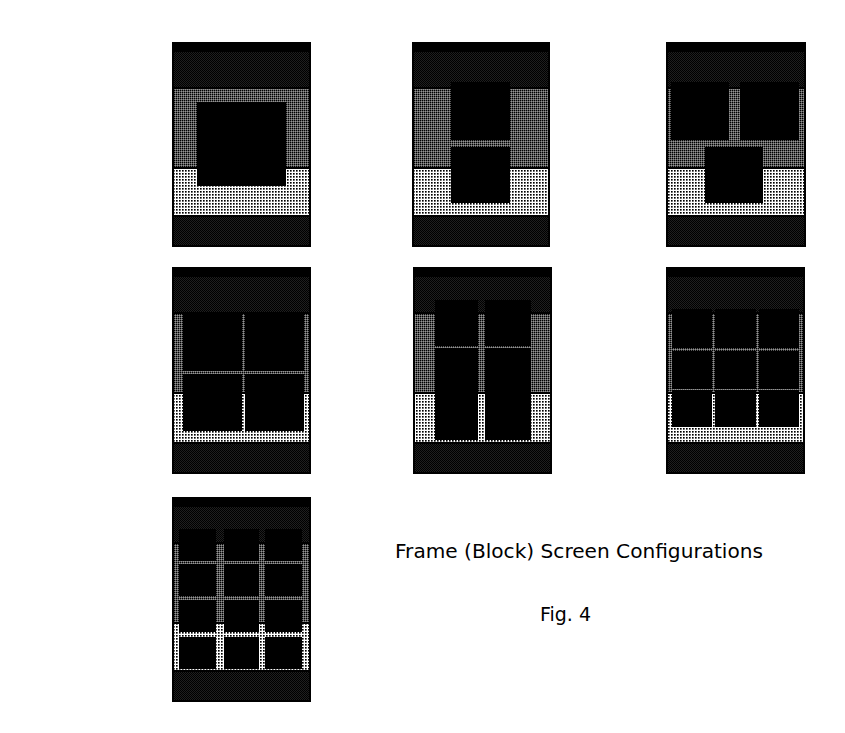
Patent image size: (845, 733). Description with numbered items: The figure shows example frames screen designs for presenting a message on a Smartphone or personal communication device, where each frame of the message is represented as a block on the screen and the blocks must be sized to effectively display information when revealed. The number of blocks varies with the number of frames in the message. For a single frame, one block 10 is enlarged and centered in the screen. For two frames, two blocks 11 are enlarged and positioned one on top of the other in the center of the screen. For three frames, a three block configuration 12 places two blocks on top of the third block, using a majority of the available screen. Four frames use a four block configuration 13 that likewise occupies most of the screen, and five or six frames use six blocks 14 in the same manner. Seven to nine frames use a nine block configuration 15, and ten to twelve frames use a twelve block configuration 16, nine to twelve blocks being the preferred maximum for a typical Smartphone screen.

The 1 block configuration 10 is at (165, 135).
The 2 block configuration 11 is at (405, 135).
The 3 block configuration 12 is at (660, 135).
The 4 block configuration 13 is at (165, 352).
The 6 block configuration 14 is at (403, 353).
The 9 block configuration 15 is at (655, 343).
The 12 block configuration 16 is at (162, 582).